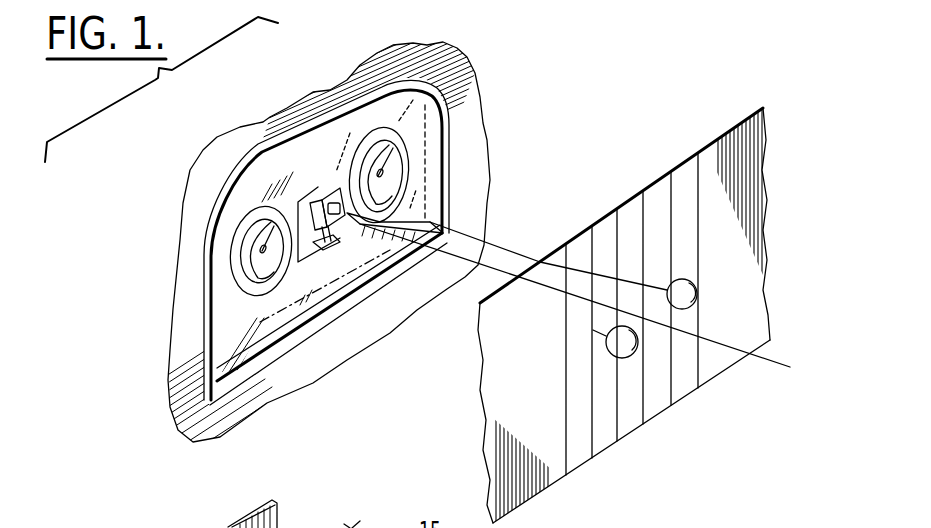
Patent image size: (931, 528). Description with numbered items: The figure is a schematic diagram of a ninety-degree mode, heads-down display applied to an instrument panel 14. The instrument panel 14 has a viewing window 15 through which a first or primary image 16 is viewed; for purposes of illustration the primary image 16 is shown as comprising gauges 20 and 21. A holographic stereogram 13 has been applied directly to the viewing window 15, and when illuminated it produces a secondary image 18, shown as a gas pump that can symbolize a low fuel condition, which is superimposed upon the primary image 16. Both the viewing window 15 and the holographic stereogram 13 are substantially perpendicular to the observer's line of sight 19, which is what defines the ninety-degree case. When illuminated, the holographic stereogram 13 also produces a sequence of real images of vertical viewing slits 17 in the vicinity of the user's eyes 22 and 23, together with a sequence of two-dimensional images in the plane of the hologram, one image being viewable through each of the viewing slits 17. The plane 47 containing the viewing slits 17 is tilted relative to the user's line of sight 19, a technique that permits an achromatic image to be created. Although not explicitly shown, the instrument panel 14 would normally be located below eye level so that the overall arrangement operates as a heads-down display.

The holographic stereogram 13 is at (318, 187).
The instrument panel 14 is at (412, 118).
The viewing window 15 is at (240, 309).
The primary image 16 is at (283, 290).
The vertical viewing slits 17 is at (604, 237).
The secondary image 18 is at (347, 213).
The observer's line of sight 19 is at (755, 362).
The gauge 20 is at (238, 254).
The gauge 21 is at (402, 157).
The user's eye 22 is at (698, 283).
The user's eye 23 is at (623, 358).
The plane containing viewing slits 47 is at (547, 468).